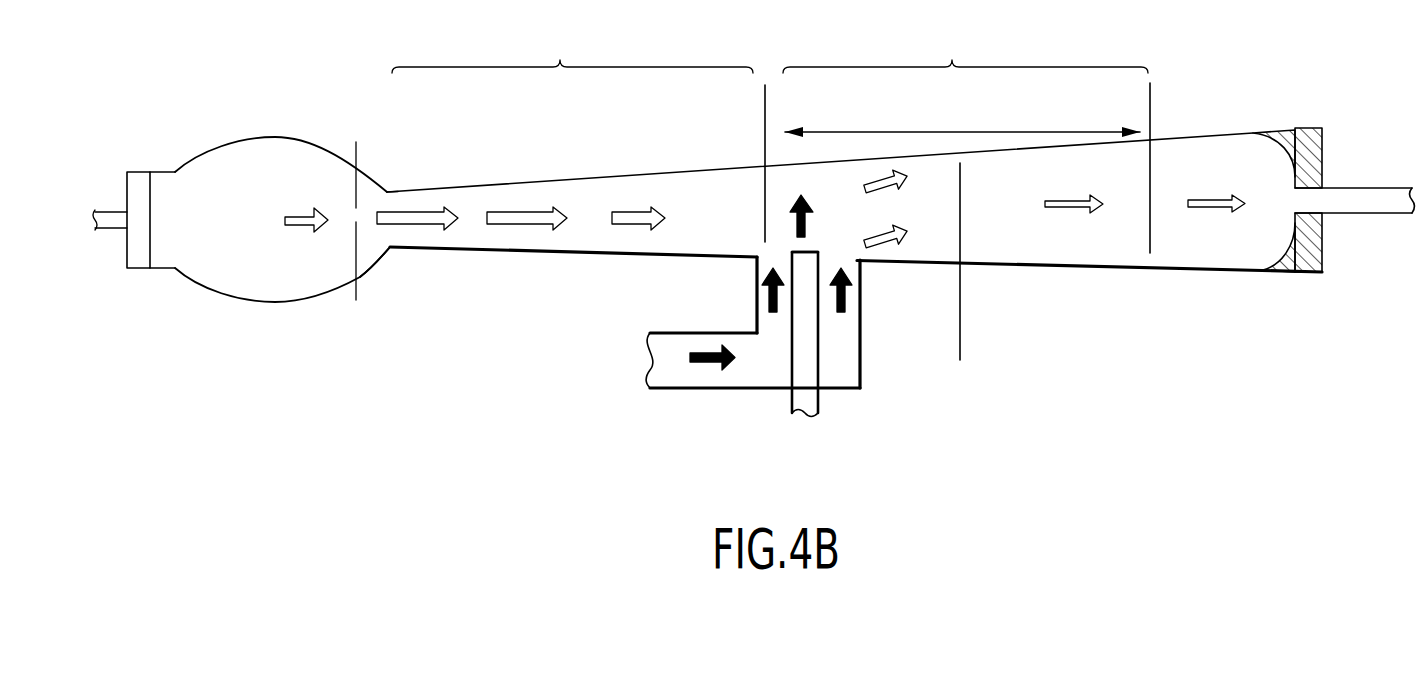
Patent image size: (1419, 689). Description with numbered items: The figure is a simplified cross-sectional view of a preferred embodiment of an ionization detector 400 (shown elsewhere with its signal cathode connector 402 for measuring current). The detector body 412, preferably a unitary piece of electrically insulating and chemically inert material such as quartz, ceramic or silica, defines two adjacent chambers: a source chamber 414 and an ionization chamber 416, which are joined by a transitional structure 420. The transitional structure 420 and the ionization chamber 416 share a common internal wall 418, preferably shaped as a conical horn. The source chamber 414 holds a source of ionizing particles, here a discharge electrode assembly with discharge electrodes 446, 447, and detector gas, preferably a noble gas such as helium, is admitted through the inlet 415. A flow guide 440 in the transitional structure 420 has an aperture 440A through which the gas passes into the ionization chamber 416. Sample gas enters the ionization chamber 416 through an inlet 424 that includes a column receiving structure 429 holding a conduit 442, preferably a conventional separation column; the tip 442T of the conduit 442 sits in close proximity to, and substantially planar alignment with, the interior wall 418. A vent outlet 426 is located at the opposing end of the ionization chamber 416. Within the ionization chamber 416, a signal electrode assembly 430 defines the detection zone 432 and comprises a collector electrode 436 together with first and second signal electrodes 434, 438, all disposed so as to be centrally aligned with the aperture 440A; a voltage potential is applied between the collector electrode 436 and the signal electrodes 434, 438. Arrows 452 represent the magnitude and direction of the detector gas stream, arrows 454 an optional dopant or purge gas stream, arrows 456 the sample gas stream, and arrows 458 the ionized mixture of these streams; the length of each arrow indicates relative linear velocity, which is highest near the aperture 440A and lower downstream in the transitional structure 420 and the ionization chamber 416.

The ionization detector 400 is at (1082, 448).
The signal cathode connector 402 is at (555, 250).
The detector body 412 is at (1275, 130).
The source chamber 414 is at (225, 142).
The inlet 415 is at (115, 232).
The ionization chamber 416 is at (1097, 268).
The internal wall 418 is at (700, 254).
The transitional structure 420 is at (572, 47).
The inlet 424 is at (789, 373).
The vent outlet 426 is at (1365, 187).
The column receiving structure 429 is at (860, 335).
The signal electrode assembly 430 is at (965, 47).
The detection zone 432 is at (990, 97).
The first signal electrode 434 is at (765, 112).
The collector electrode 436 is at (962, 340).
The second signal electrode 438 is at (1150, 108).
The flow guide 440 is at (815, 201).
The aperture 440A is at (387, 192).
The conduit 442 is at (872, 350).
The tip 442T is at (857, 266).
The discharge electrode 446 is at (357, 152).
The discharge electrode 447 is at (357, 296).
The arrows 452 is at (308, 230).
The arrows 454 is at (703, 360).
The arrows 456 is at (805, 220).
The arrows 458 is at (1212, 210).